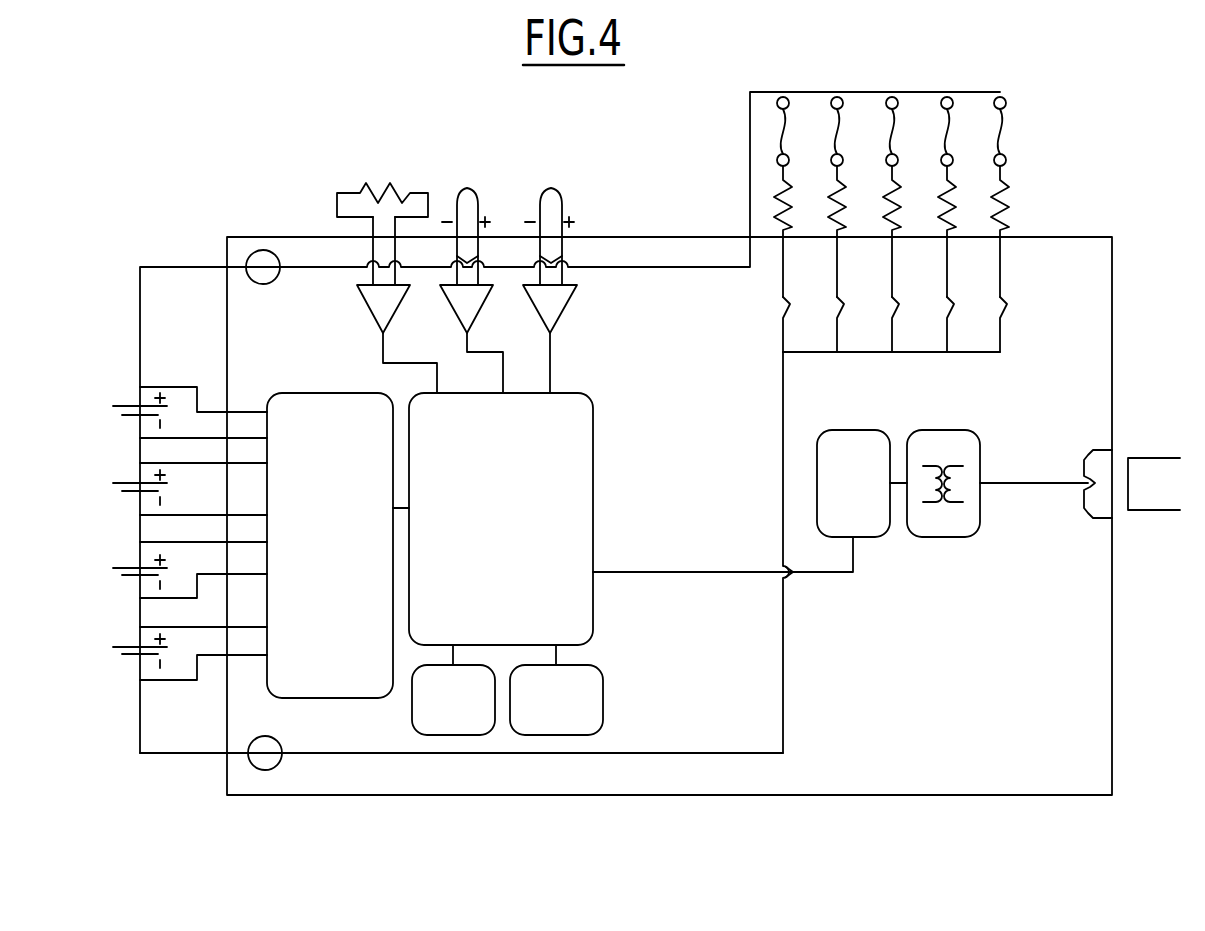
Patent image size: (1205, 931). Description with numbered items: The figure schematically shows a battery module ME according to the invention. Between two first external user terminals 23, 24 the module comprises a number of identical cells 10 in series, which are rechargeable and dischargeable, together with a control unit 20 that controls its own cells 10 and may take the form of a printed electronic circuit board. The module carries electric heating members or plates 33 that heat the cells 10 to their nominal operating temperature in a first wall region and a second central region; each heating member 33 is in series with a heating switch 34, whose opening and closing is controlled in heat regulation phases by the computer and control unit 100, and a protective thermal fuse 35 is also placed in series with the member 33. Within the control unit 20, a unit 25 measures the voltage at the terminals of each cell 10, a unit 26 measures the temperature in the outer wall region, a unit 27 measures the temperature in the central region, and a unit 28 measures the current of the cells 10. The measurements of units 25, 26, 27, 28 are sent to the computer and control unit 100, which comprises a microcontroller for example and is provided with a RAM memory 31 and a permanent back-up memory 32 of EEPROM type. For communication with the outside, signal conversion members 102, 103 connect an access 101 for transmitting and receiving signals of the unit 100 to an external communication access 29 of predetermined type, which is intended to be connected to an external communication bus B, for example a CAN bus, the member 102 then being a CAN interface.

The cells 10 is at (122, 480).
The control unit 20 is at (565, 787).
The first external user terminal 23 is at (250, 760).
The first external user terminal 24 is at (263, 252).
The voltage measuring unit 25 is at (308, 548).
The temperature measuring unit 26 is at (460, 300).
The temperature measuring unit 27 is at (558, 297).
The current measuring unit 28 is at (368, 307).
The external communication access 29 is at (1092, 450).
The RAM memory 31 is at (453, 690).
The permanent back-up memory 32 is at (556, 690).
The heating member 33 is at (790, 228).
The heating switch 34 is at (1005, 315).
The protective thermal fuse 35 is at (1008, 106).
The computer and control unit 100 is at (476, 513).
The access 101 is at (578, 572).
The signal conversion member 102 is at (862, 483).
The signal conversion member 103 is at (933, 538).
The external communication bus B is at (1167, 505).
The battery module ME is at (913, 810).